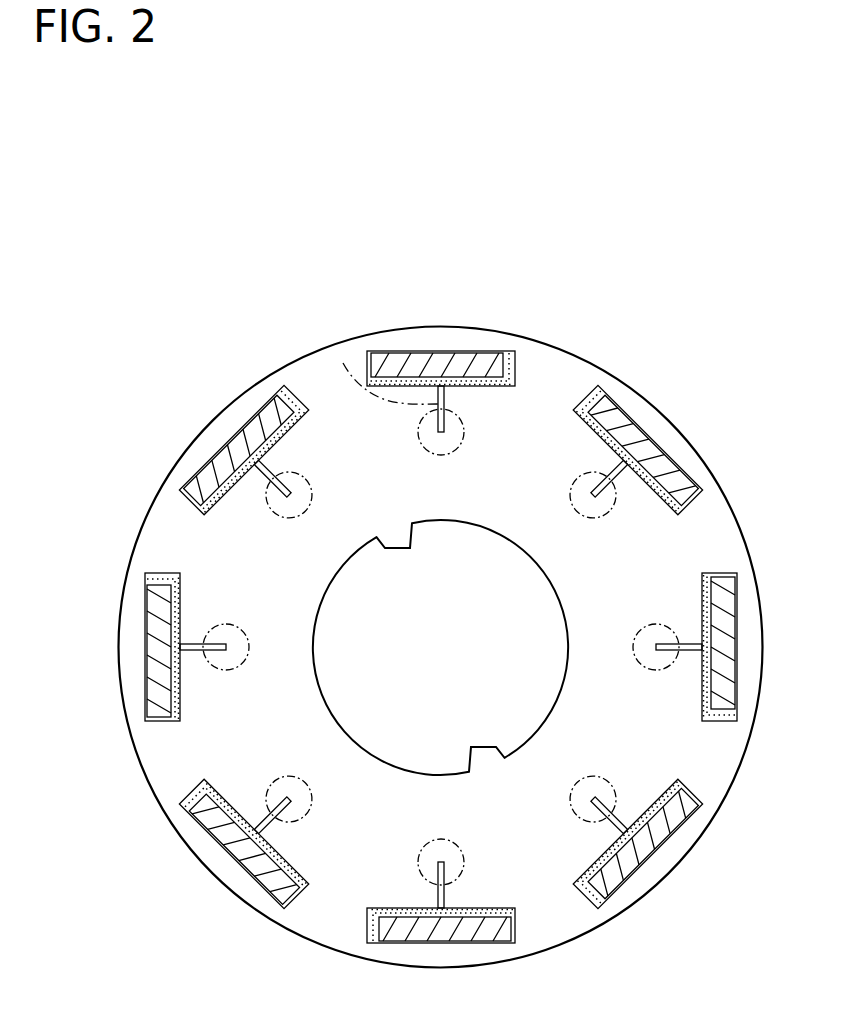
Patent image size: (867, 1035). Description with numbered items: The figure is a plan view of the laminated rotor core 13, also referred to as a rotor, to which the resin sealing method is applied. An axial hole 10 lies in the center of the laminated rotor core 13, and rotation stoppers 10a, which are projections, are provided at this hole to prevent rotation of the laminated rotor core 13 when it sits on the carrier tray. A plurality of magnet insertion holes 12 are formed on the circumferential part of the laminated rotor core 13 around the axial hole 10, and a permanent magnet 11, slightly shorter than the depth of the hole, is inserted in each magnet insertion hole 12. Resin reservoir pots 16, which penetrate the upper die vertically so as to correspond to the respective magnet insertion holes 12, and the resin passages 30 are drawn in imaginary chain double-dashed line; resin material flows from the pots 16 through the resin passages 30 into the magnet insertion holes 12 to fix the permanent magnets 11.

The axial hole 10 is at (438, 677).
The rotation stoppers 10a is at (480, 758).
The permanent magnet 11 is at (645, 447).
The magnet insertion hole 12 is at (664, 497).
The laminated rotor core 13 is at (741, 767).
The resin reservoir pot 16 is at (583, 475).
The resin passage 30 is at (293, 472).